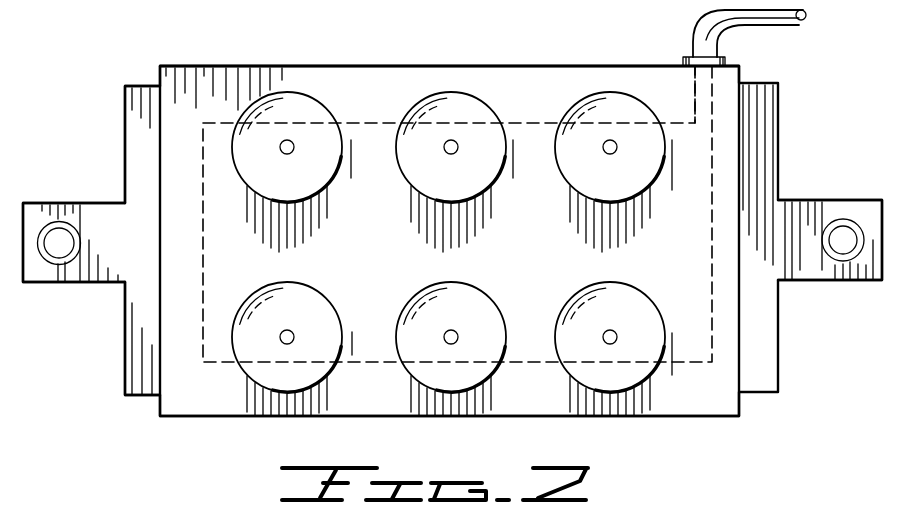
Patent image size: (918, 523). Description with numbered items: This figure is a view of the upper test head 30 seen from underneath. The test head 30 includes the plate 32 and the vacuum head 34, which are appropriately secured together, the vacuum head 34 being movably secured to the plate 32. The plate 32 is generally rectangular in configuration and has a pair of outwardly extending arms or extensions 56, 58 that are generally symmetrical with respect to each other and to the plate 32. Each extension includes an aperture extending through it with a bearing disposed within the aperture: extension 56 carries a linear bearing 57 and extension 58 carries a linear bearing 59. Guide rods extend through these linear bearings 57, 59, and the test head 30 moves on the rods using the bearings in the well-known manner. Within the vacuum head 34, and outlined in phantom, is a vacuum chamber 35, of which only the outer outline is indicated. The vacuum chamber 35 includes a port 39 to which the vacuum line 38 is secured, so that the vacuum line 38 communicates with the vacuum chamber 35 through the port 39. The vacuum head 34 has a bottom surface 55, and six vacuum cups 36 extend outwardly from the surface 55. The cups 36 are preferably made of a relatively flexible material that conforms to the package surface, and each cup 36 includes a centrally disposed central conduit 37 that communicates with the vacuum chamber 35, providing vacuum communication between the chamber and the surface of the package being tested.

The upper test head 30 is at (118, 122).
The plate 32 is at (127, 157).
The vacuum head 34 is at (403, 57).
The vacuum chamber 35 is at (712, 280).
The vacuum cups 36 is at (407, 112).
The central conduit 37 is at (288, 154).
The vacuum line 38 is at (696, 36).
The port 39 is at (690, 103).
The bottom surface 55 is at (525, 70).
The extension 56 is at (106, 212).
The linear bearing 57 is at (55, 263).
The extension 58 is at (826, 210).
The linear bearing 59 is at (852, 222).